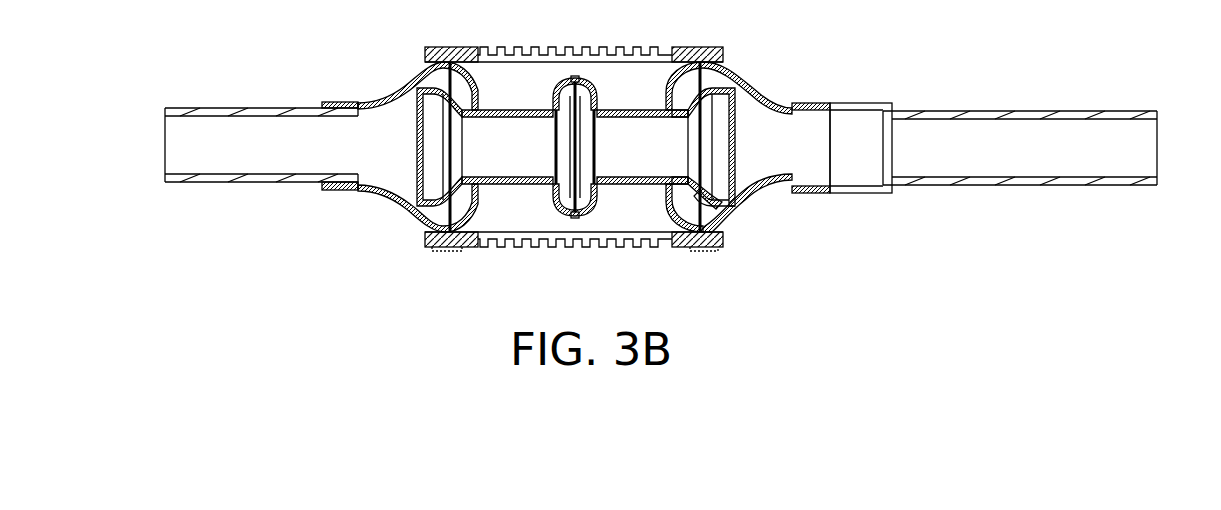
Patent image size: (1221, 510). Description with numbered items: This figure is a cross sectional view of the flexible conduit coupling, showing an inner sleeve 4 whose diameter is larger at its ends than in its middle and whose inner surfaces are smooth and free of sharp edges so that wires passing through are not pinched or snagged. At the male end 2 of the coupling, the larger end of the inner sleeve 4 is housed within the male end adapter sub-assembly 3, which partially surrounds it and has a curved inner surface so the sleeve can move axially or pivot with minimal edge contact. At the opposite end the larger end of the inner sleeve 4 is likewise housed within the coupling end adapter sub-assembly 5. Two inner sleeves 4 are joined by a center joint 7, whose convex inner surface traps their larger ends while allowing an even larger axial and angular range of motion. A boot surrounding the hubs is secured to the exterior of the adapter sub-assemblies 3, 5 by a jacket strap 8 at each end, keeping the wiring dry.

The male end 2 is at (855, 103).
The male end adapter sub-assembly 3 is at (755, 90).
The inner sleeve 4 is at (515, 108).
The coupling end adapter sub-assembly 5 is at (400, 92).
The center joint 7 is at (557, 213).
The jacket strap 8 is at (443, 250).